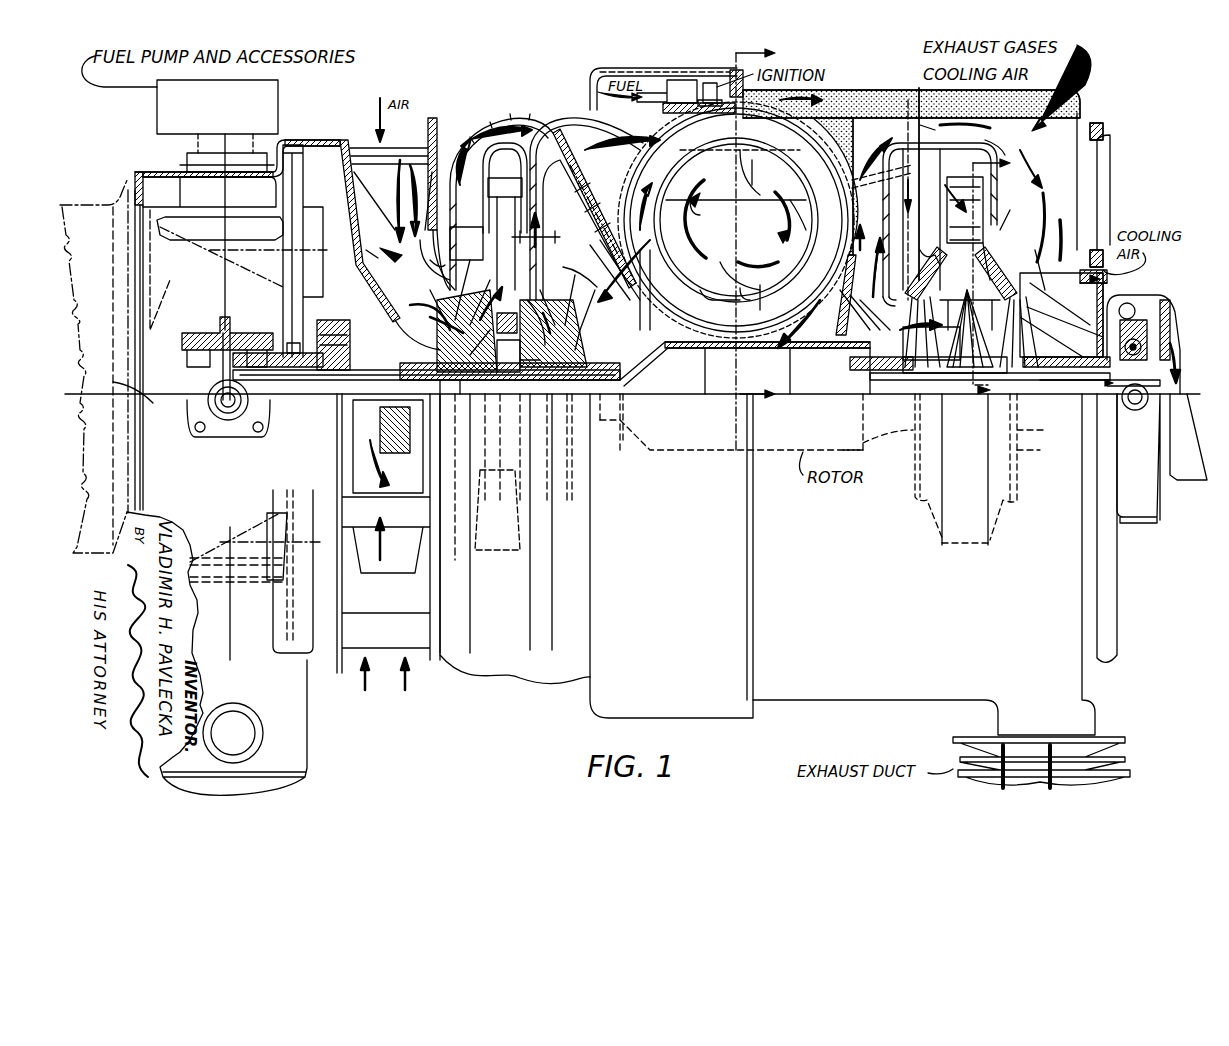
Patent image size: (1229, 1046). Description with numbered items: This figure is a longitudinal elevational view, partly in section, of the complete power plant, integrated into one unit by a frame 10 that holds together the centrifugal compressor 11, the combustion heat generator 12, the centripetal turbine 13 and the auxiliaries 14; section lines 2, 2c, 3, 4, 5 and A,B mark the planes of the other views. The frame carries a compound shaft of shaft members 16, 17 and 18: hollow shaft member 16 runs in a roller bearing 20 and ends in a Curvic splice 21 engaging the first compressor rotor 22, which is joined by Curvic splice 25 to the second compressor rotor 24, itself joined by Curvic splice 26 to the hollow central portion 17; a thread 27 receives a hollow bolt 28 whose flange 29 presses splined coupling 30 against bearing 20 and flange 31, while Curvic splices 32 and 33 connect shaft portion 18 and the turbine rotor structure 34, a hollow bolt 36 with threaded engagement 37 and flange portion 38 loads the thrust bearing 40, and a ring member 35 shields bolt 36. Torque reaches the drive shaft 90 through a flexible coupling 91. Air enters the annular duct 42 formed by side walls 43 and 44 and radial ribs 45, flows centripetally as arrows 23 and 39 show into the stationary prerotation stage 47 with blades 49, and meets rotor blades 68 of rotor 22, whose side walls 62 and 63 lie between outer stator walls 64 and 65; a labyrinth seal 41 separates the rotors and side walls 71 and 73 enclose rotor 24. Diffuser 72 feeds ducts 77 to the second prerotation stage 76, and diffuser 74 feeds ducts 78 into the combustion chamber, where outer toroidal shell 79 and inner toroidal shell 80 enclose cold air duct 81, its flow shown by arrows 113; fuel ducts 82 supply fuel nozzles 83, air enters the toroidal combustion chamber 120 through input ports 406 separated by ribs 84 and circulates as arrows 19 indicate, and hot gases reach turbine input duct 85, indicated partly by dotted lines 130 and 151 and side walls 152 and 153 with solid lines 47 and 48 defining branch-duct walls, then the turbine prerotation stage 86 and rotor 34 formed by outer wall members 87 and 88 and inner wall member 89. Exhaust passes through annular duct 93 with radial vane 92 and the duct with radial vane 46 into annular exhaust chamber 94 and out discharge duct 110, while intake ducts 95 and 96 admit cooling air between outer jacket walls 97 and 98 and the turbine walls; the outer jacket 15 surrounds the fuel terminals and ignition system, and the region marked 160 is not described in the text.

The section line 2 is at (447, 264).
The section line 2c is at (505, 201).
The section plane 3 is at (540, 237).
The section line 4 is at (762, 247).
The section line 5 is at (999, 274).
The frame 10 is at (290, 135).
The centrifugal compressor 11 is at (478, 131).
The combustion heat generator 12 is at (649, 156).
The centripetal turbine 13 is at (1013, 213).
The auxiliaries 14 is at (219, 120).
The outer jacket 15 is at (617, 69).
The shaft member 16 is at (298, 375).
The central portion of the shaft 17 is at (694, 345).
The shaft member 18 is at (1048, 377).
The arrows 19 is at (773, 207).
The roller bearing 20 is at (393, 376).
The Gleason Curvic shaft splice 21 is at (439, 373).
The first compressor rotor 22 is at (473, 375).
The arrow 23 is at (365, 119).
The second compressor rotor 24 is at (550, 375).
The Curvic splice 25 is at (512, 375).
The Curvic splice 26 is at (601, 428).
The thread 27 is at (630, 393).
The hollow bolt 28 is at (243, 370).
The flange 29 is at (238, 330).
The splined coupling 30 is at (288, 342).
The flange 31 is at (343, 372).
The Curvic splice 32 is at (884, 394).
The Curvic splice 33 is at (1033, 393).
The rotor structure of the turbine 34 is at (947, 393).
The ring member 35 is at (960, 357).
The hollow bolt 36 is at (1132, 384).
The threaded engagement 37 is at (856, 378).
The flange portion 38 is at (1148, 401).
The arrow 39 is at (352, 228).
The thrust bearing 40 is at (1167, 341).
The labyrinth seal 41 is at (863, 276).
The annular duct 42 is at (405, 150).
The side wall 43 is at (348, 172).
The side wall 44 is at (428, 170).
The radial ribs 45 is at (393, 201).
The radial vane 46 is at (1095, 279).
The stationary prerotation stage 47 is at (919, 92).
The branch duct wall line 48 is at (925, 128).
The blades 49 is at (414, 346).
The side wall 62 is at (463, 316).
The second side wall 63 is at (479, 273).
The outer stator wall 64 is at (420, 259).
The outer stator wall 65 is at (593, 286).
The rotor blades 68 is at (476, 321).
The side wall 71 is at (511, 231).
The diffuser 72 is at (518, 203).
The side wall 73 is at (583, 286).
The diffuser 74 is at (576, 158).
The prerotation stage 76 is at (633, 311).
The ducts 77 is at (486, 113).
The ducts 78 is at (573, 119).
The outer toroidal shell 79 is at (768, 359).
The inner toroidal shell 80 is at (698, 273).
The cold air duct 81 is at (715, 303).
The fuel ducts 82 is at (648, 70).
The fuel nozzles 83 is at (751, 172).
The ribs 84 is at (690, 201).
The turbine input duct 85 is at (940, 224).
The turbine prerotation stage 86 is at (996, 201).
The outer wall member 87 is at (956, 281).
The outer wall member 88 is at (988, 263).
The inner wall member 89 is at (970, 319).
The drive shaft 90 is at (186, 398).
The flexible coupling 91 is at (224, 316).
The radial vane 92 is at (853, 346).
The annular duct 93 is at (1079, 308).
The annular exhaust chamber 94 is at (1059, 159).
The intake duct 95 is at (904, 191).
The intake duct 96 is at (1028, 263).
The outer jacket wall 97 is at (923, 246).
The outer jacket wall 98 is at (1040, 221).
The discharge duct 110 is at (1140, 756).
The arrows 113 is at (756, 297).
The toroidal combustion chamber 120 is at (766, 226).
The dotted line 130 is at (874, 189).
The dotted line 151 is at (958, 131).
The side wall 152 is at (999, 151).
The side wall 153 is at (990, 204).
The insulation 160 is at (806, 136).
The input ports 406 is at (768, 159).
The section lines A,B is at (454, 279).